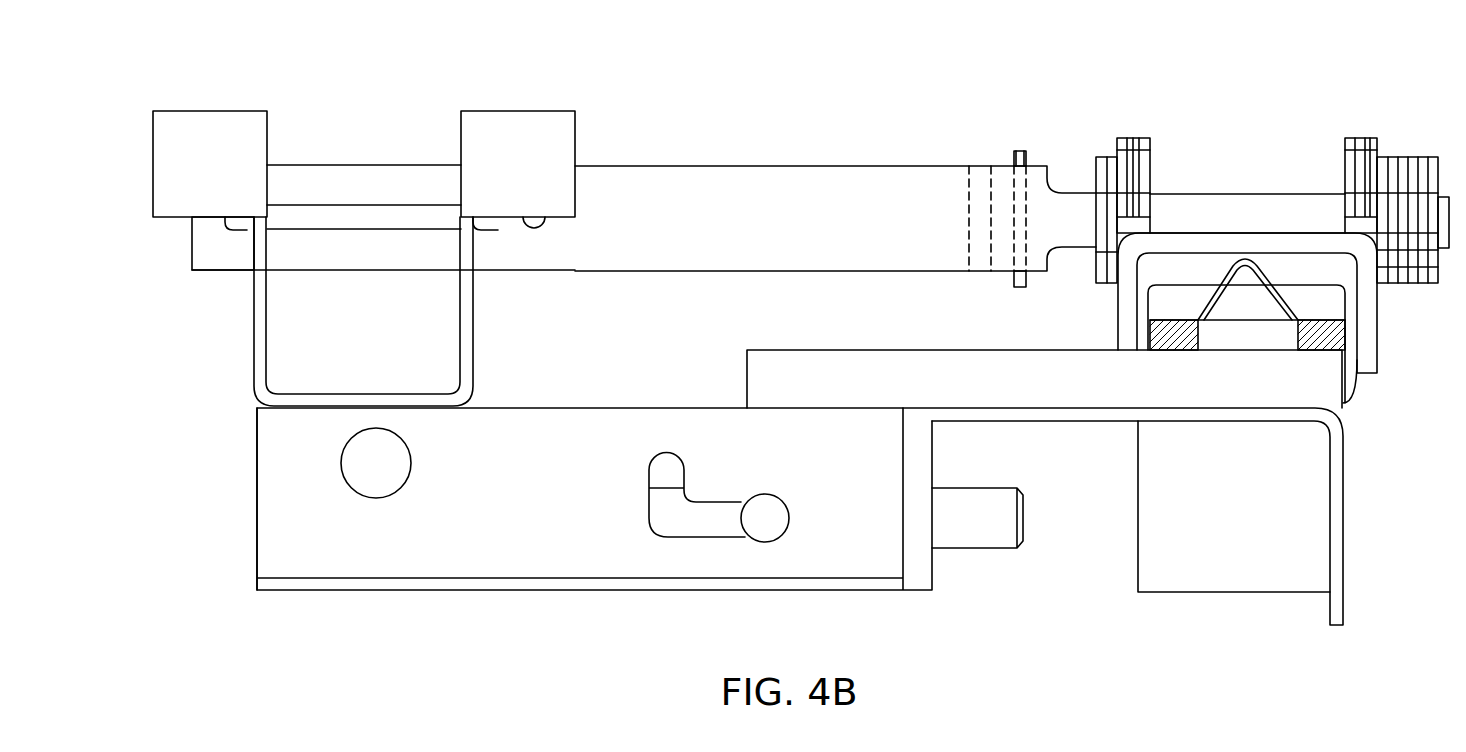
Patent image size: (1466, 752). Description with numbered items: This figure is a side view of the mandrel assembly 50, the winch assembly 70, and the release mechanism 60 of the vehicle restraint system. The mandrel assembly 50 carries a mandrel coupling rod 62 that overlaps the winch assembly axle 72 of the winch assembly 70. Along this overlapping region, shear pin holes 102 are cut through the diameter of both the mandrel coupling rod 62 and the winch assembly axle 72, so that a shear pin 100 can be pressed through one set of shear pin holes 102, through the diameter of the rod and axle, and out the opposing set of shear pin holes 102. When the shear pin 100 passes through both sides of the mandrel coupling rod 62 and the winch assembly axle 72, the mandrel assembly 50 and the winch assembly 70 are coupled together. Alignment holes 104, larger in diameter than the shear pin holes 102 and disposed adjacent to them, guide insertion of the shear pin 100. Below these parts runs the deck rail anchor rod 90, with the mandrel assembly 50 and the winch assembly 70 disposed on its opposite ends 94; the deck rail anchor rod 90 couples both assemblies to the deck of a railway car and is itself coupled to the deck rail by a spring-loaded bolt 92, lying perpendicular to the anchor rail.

The mandrel assembly 50 is at (316, 118).
The release mechanism 60 is at (836, 173).
The mandrel coupling rod 62 is at (773, 183).
The winch assembly 70 is at (1272, 221).
The winch assembly axle 72 is at (1251, 193).
The deck rail anchor rod 90 is at (878, 527).
The spring-loaded bolt 92 is at (980, 540).
The opposite ends 94 is at (283, 487).
The shear pin 100 is at (1012, 283).
The shear pin holes 102 is at (1028, 160).
The alignment holes 104 is at (967, 219).